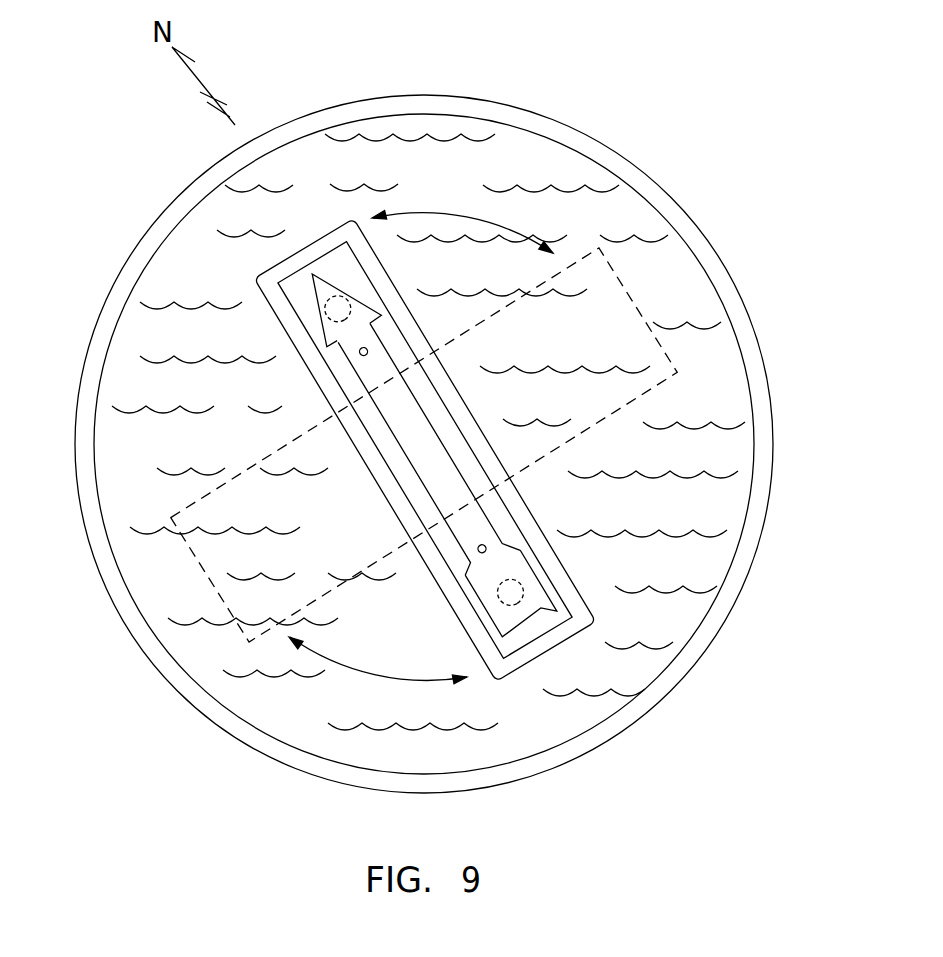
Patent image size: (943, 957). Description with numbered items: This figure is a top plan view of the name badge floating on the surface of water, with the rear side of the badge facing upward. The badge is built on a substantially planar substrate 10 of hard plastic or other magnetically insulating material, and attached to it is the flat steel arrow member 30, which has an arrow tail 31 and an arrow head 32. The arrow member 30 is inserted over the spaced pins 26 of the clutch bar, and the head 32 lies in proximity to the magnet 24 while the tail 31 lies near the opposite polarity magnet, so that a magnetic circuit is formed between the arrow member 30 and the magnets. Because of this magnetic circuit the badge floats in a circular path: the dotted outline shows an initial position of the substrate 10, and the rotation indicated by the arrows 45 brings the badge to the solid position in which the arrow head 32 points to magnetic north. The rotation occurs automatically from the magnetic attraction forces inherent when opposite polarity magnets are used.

The substrate 10 is at (634, 289).
The magnet 24 is at (338, 305).
The pins 26 is at (513, 590).
The arrow member 30 is at (489, 521).
The arrow tail 31 is at (508, 617).
The arrow head 32 is at (321, 282).
The arrows 45 is at (445, 213).